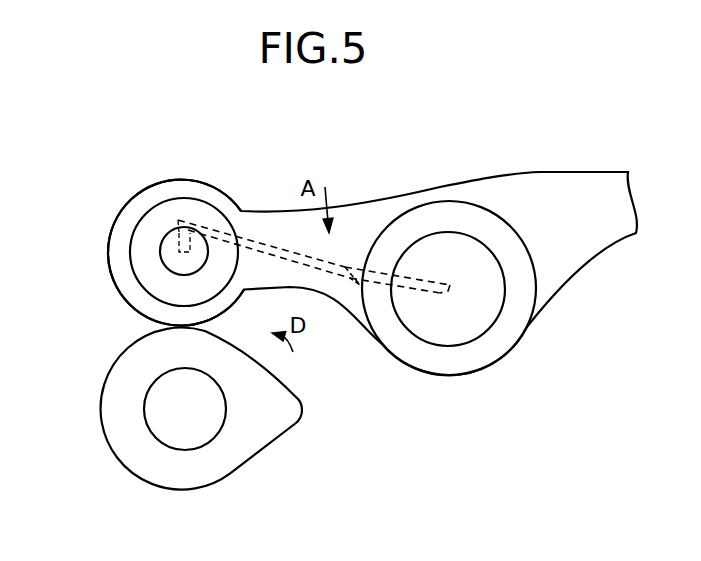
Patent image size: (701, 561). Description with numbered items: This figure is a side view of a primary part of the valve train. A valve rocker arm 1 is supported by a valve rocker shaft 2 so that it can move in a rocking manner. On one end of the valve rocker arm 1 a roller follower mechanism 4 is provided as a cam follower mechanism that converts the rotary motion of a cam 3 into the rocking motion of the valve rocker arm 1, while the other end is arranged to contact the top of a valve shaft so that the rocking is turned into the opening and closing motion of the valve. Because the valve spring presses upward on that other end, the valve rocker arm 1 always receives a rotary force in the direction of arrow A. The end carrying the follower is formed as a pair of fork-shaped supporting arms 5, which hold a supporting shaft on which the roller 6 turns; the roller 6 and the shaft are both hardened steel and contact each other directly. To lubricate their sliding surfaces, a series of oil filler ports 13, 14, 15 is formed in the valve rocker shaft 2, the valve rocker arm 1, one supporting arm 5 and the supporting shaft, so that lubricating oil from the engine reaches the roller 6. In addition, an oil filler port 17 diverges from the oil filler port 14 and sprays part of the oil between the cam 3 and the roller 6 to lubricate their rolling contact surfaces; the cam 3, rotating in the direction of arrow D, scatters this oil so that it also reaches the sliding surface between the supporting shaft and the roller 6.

The valve rocker arm 1 is at (527, 172).
The valve rocker shaft 2 is at (463, 300).
The cam 3 is at (263, 452).
The roller follower mechanism 4 is at (90, 261).
The supporting arm 5 is at (132, 237).
The roller 6 is at (170, 180).
The oil filler port 13 is at (447, 292).
The oil filler port 14 is at (343, 265).
The oil filler port 15 is at (173, 246).
The diverged oil filler port 17 is at (360, 285).